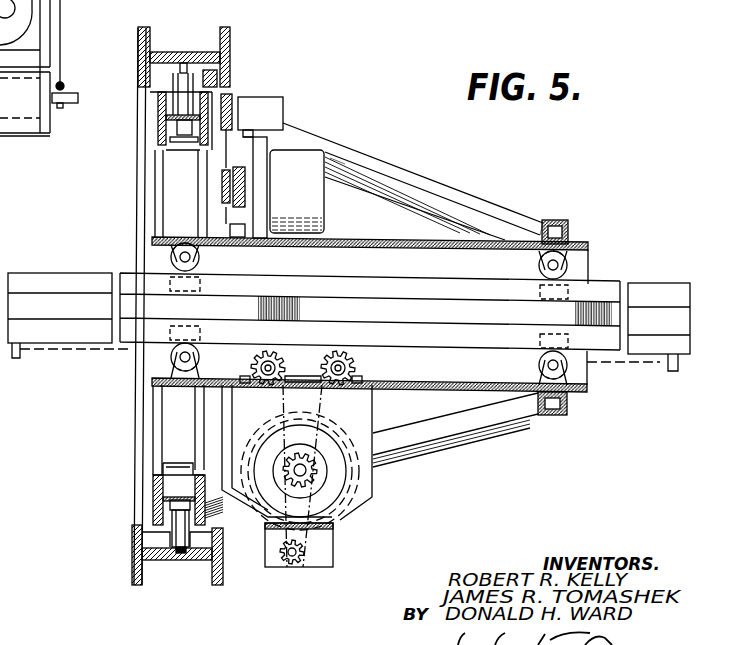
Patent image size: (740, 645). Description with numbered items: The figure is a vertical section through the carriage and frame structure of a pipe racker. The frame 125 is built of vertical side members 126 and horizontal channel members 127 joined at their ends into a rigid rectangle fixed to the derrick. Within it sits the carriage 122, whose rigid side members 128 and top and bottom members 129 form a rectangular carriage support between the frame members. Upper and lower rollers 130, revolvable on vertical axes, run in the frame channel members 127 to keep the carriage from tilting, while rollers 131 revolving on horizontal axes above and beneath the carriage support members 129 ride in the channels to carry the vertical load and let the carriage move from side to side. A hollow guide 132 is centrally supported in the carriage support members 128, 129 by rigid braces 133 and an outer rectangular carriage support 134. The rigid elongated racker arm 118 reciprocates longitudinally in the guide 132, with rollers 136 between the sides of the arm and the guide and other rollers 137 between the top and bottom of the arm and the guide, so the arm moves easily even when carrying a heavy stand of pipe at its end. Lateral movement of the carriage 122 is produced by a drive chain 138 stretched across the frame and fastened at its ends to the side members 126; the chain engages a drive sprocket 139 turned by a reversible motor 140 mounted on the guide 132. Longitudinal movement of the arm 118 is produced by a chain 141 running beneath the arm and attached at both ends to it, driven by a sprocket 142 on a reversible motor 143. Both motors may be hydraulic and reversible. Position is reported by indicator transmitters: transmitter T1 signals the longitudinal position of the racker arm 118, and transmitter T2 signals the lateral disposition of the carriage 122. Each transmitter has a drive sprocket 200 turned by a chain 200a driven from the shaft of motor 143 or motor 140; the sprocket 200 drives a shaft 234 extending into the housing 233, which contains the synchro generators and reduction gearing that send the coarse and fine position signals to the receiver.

The racker arm 118 is at (22, 273).
The carriage 122 is at (534, 202).
The frame 125 is at (128, 565).
The vertical side members 126 is at (137, 406).
The horizontal channel members 127 is at (230, 46).
The side members 128 is at (176, 171).
The top and bottom members 129 is at (162, 130).
The upper and lower rollers 130 is at (222, 78).
The rollers 131 is at (188, 62).
The hollow guide 132 is at (342, 237).
The braces 133 is at (413, 178).
The outer rectangular carriage support 134 is at (563, 415).
The rollers 136 is at (205, 312).
The rollers 137 is at (204, 262).
The drive chain 138 is at (268, 251).
The drive sprocket 139 is at (232, 163).
The reversible motor 140 is at (327, 153).
The chain 141 is at (370, 356).
The sprocket 142 is at (316, 478).
The reversible motor 143 is at (348, 490).
The drive sprocket 200 is at (233, 103).
The chain 200a is at (228, 160).
The housing 233 is at (284, 113).
The shaft 234 is at (298, 567).
The transmitter T1 is at (260, 559).
The transmitter T2 is at (281, 120).